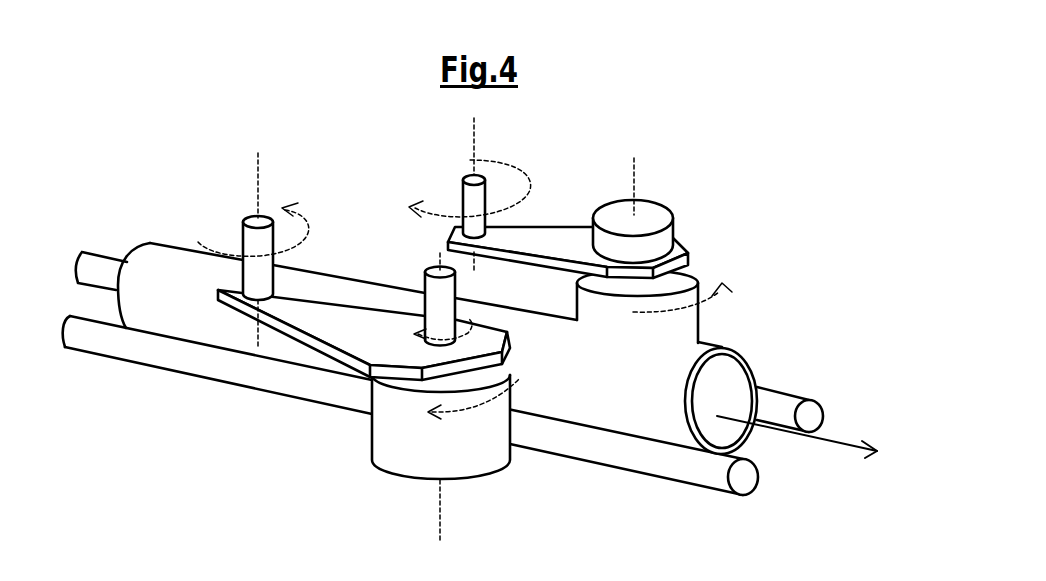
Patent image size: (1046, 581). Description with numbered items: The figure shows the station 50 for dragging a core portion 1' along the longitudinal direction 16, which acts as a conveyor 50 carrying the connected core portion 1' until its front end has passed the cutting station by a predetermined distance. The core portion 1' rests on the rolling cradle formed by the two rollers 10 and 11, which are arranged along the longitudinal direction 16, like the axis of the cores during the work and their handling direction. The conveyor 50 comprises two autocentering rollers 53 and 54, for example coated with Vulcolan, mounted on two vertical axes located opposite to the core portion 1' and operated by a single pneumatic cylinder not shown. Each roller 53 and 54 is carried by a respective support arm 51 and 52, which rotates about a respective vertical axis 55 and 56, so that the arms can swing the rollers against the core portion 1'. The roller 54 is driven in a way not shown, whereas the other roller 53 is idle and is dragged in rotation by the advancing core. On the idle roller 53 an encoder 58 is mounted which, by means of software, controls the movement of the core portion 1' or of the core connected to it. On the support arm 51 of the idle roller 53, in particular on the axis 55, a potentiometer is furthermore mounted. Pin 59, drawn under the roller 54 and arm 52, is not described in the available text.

The core portion 1' is at (399, 262).
The roller of the rolling cradle 10 is at (627, 452).
The roller of the rolling cradle 11 is at (764, 384).
The longitudinal direction 16 is at (813, 440).
The dragging station / conveyor 50 is at (663, 100).
The support arm 51 is at (562, 234).
The support arm 52 is at (347, 322).
The idle autocentering roller 53 is at (682, 328).
The driven autocentering roller 54 is at (462, 452).
The vertical axis 55 is at (473, 142).
The vertical axis 56 is at (257, 178).
The encoder 58 is at (657, 221).
The pin of second rotary actuator 59 is at (437, 290).